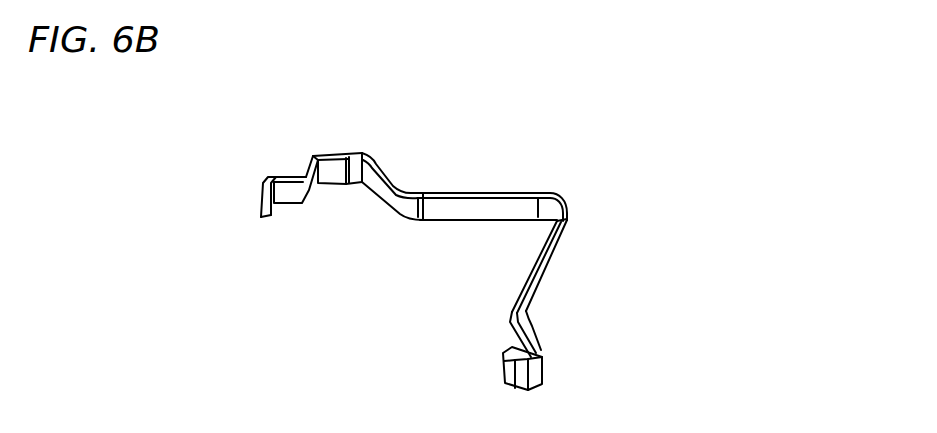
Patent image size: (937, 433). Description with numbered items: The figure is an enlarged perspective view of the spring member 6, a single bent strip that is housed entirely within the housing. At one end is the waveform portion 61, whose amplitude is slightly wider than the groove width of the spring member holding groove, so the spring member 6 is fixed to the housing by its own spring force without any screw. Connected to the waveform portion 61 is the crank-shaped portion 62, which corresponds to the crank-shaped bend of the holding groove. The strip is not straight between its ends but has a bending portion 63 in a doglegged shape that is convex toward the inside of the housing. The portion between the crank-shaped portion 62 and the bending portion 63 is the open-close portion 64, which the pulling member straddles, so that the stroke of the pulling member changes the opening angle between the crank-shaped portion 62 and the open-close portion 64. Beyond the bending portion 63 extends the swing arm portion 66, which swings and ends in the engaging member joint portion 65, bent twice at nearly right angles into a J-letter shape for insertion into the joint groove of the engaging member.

The spring member 6 is at (425, 140).
The waveform portion 61 is at (276, 170).
The crank-shaped portion 62 is at (376, 156).
The bending portion 63 is at (563, 196).
The open-close portion 64 is at (488, 192).
The engaging member joint portion 65 is at (543, 357).
The swing arm portion 66 is at (545, 272).